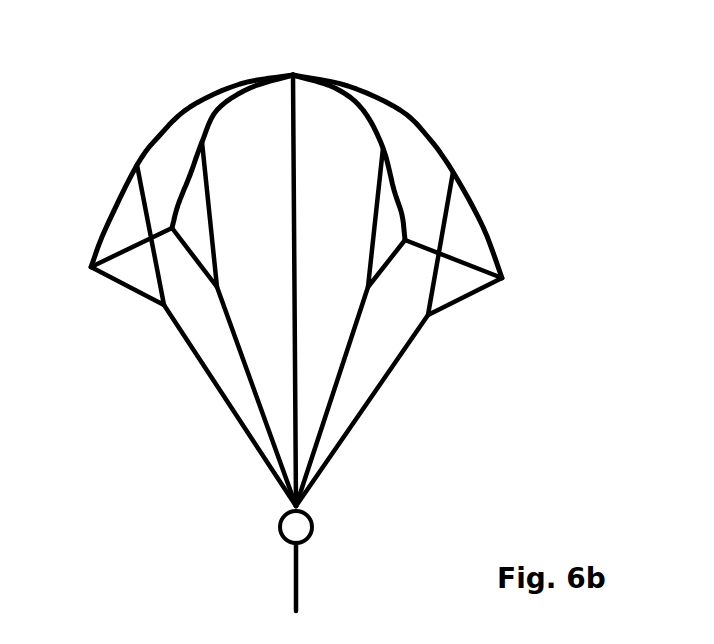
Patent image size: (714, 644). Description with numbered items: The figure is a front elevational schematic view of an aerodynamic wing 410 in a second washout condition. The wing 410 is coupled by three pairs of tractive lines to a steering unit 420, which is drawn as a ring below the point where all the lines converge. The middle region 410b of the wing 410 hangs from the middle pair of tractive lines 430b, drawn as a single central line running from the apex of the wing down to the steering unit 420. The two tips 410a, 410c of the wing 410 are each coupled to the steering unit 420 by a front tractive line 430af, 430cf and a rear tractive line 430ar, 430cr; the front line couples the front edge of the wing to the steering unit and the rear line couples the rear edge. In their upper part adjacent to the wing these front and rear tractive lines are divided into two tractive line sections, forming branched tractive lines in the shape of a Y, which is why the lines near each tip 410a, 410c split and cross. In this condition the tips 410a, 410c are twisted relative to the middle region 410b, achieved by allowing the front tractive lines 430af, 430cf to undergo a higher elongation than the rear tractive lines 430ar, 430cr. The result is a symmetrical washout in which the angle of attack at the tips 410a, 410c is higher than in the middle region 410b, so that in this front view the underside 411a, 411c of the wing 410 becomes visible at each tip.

The aerodynamic wing 410 is at (408, 95).
The tip of the aerodynamic wing 410a is at (146, 113).
The middle region of the wing 410b is at (378, 63).
The tip of the aerodynamic wing 410c is at (471, 139).
The underside of the wing 411a is at (172, 155).
The underside of the wing 411c is at (413, 190).
The steering unit 420 is at (312, 530).
The pair of tractive lines 430b is at (333, 252).
The rear tractive line 430ar is at (233, 336).
The front tractive line 430af is at (220, 396).
The rear tractive line 430cr is at (353, 355).
The front tractive line 430cf is at (363, 410).